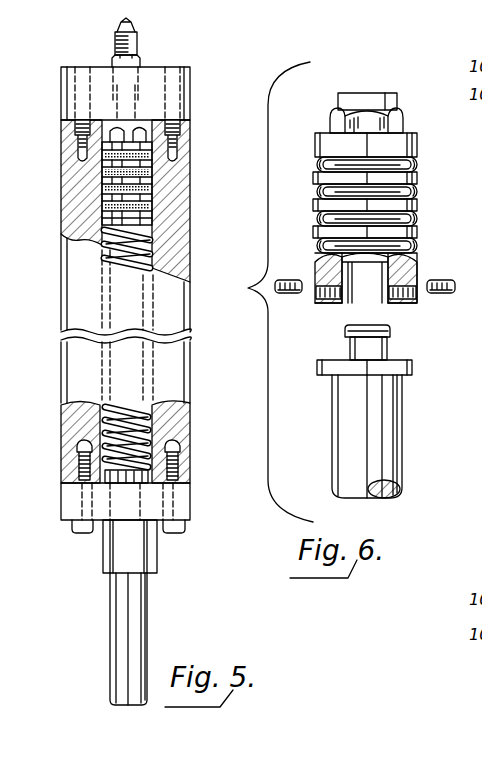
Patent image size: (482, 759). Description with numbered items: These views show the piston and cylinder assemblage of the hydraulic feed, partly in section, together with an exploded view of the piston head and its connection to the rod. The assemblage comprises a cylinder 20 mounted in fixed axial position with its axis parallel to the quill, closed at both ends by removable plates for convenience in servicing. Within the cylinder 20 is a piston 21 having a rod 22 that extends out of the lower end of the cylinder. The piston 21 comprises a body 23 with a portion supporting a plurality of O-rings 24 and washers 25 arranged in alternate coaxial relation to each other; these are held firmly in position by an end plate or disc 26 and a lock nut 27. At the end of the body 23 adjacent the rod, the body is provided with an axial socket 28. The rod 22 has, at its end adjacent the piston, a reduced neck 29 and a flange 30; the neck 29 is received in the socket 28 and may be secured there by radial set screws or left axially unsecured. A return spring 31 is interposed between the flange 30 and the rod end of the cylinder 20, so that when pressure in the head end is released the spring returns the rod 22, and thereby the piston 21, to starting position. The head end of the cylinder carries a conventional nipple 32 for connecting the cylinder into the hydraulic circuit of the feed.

In FIG. 5, the cylinder 20 is at (62, 289).
In FIG. 5, the piston 21 is at (100, 215).
In FIG. 6, the piston 21 is at (418, 265).
In FIG. 5, the rod 22 is at (110, 627).
In FIG. 6, the rod 22 is at (402, 465).
In FIG. 6, the body 23 is at (395, 297).
In FIG. 6, the O-rings 24 is at (420, 247).
In FIG. 6, the washers 25 is at (322, 233).
In FIG. 6, the end plate or disc 26 is at (407, 143).
In FIG. 6, the lock nut 27 is at (358, 93).
In FIG. 6, the axial socket 28 is at (365, 287).
In FIG. 6, the reduced neck 29 is at (388, 348).
In FIG. 6, the flange 30 is at (412, 368).
In FIG. 5, the return spring 31 is at (100, 423).
In FIG. 5, the nipple 32 is at (137, 35).